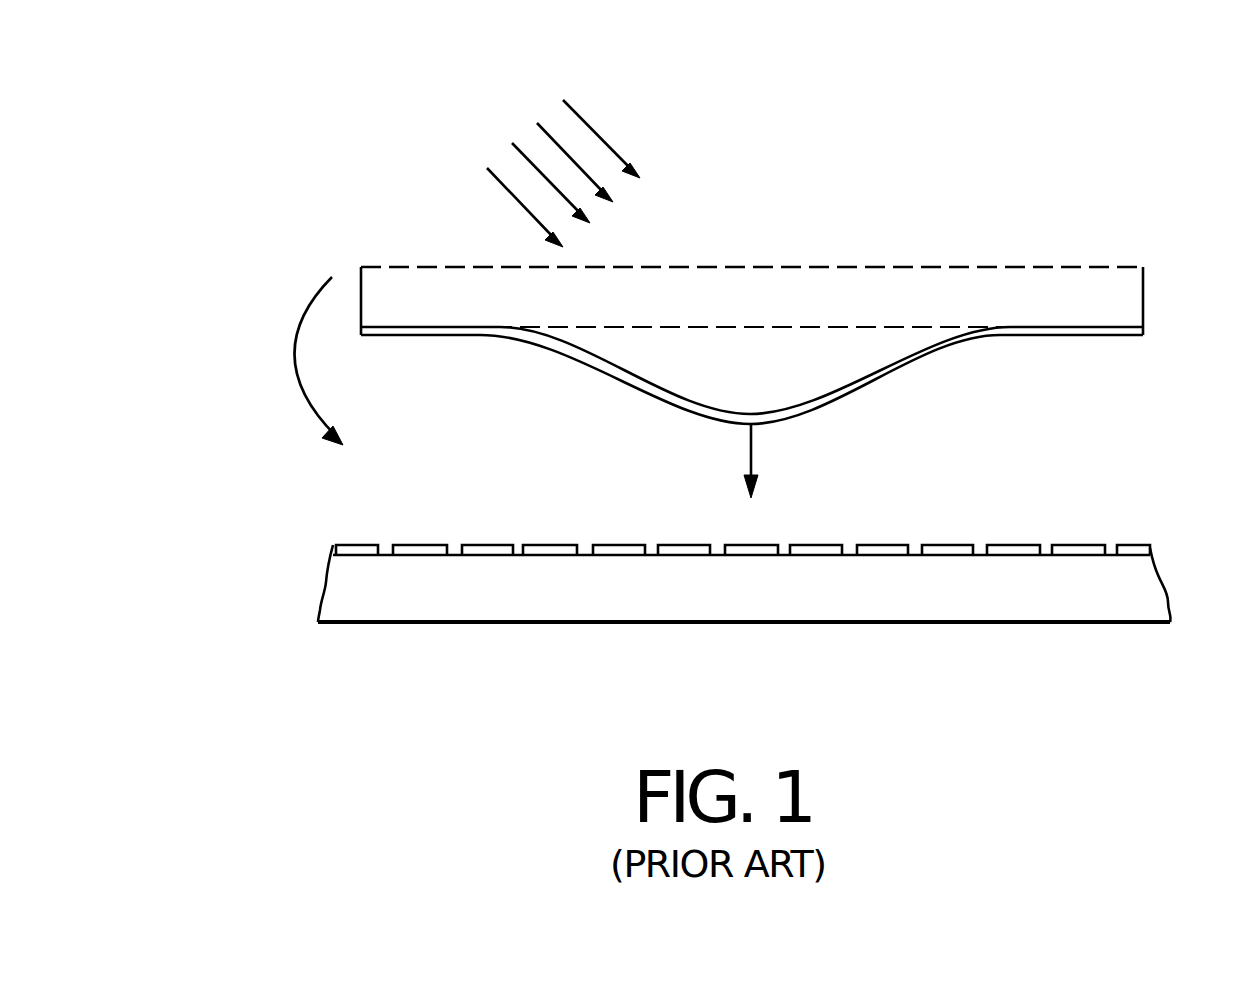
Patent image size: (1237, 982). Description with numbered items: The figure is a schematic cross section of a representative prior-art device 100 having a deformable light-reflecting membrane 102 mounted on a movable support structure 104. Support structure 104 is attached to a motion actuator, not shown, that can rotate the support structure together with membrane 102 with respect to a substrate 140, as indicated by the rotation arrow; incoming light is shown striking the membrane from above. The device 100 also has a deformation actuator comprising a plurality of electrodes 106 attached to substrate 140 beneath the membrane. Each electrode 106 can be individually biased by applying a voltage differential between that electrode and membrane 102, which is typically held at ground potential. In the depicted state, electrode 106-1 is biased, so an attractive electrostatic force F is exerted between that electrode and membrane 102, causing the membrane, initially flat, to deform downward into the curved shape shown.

The prior-art device 100 is at (235, 717).
The deformable light-reflecting membrane 102 is at (897, 358).
The movable support structure 104 is at (399, 325).
The electrodes 106 is at (947, 545).
The electrode 106-1 is at (750, 545).
The substrate 140 is at (857, 622).